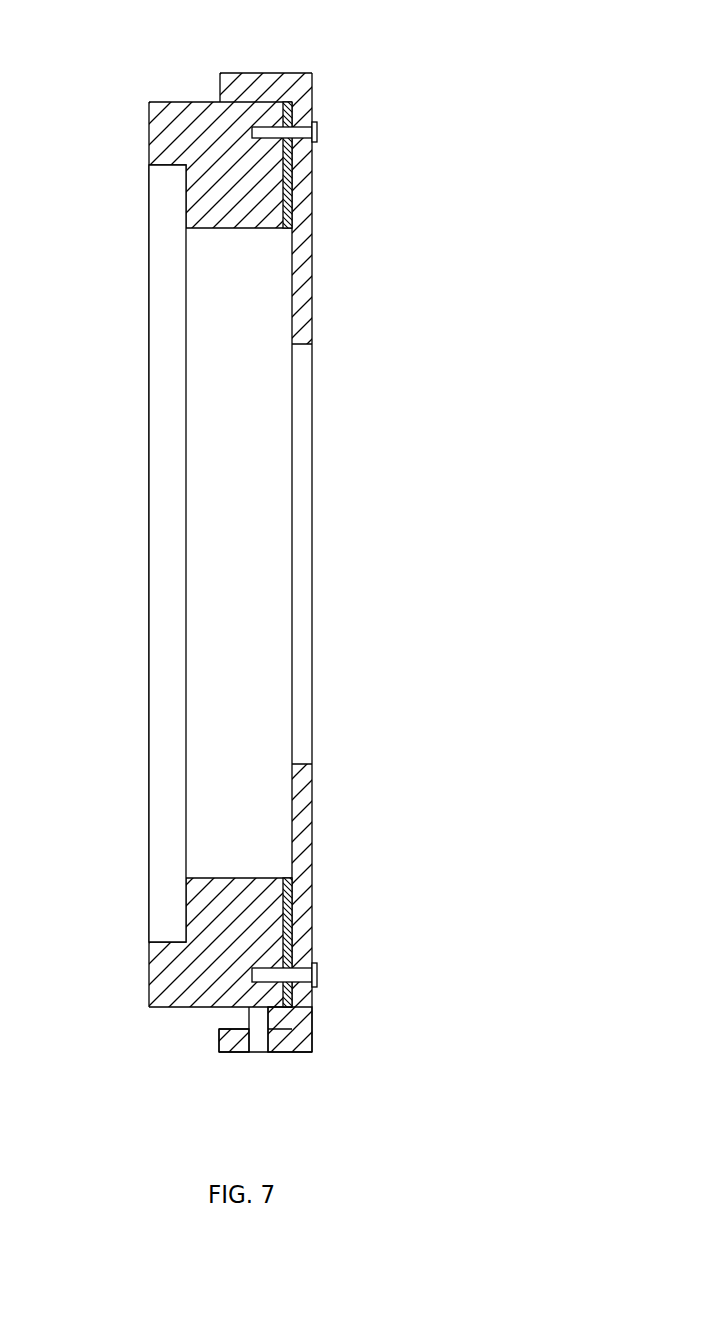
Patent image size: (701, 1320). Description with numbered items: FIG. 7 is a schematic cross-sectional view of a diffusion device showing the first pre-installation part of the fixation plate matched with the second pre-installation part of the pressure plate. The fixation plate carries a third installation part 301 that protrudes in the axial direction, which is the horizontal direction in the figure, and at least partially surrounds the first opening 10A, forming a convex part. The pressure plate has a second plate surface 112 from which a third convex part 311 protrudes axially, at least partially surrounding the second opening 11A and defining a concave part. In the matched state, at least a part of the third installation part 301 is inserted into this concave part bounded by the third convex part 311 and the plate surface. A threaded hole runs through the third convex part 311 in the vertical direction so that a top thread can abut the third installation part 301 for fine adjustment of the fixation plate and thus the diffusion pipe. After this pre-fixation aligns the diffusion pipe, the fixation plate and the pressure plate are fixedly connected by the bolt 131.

The first opening 10A is at (232, 493).
The second opening 11A is at (300, 490).
The second plate surface 112 is at (303, 197).
The bolt 131 is at (304, 137).
The third installation part 301 is at (177, 123).
The third convex part 311 is at (272, 92).